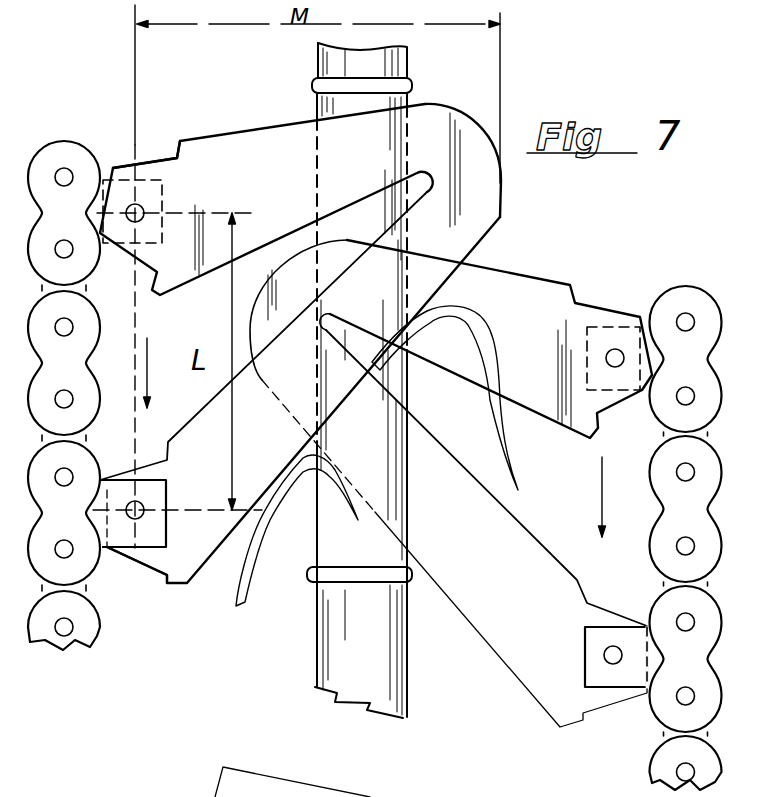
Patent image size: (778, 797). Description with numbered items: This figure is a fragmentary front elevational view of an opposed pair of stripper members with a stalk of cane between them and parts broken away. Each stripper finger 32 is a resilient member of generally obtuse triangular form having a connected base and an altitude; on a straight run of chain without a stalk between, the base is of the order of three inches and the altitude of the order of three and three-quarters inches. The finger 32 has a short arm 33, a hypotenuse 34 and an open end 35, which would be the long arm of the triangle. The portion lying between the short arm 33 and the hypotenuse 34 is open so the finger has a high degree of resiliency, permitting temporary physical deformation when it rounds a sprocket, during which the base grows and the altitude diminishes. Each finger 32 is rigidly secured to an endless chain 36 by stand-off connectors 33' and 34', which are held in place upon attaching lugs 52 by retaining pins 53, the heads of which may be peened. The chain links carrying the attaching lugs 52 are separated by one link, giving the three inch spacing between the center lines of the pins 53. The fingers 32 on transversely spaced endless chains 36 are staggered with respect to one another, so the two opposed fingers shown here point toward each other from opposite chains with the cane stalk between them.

The stripper finger 32 is at (503, 222).
The short arm 33 is at (376, 271).
The stand-off connector 33' is at (150, 130).
The hypotenuse 34 is at (373, 459).
The stand-off connector 34' is at (145, 611).
The open end 35 is at (150, 332).
The endless chain 36 is at (60, 153).
The attaching lug 52 is at (130, 553).
The retaining pin 53 is at (144, 210).